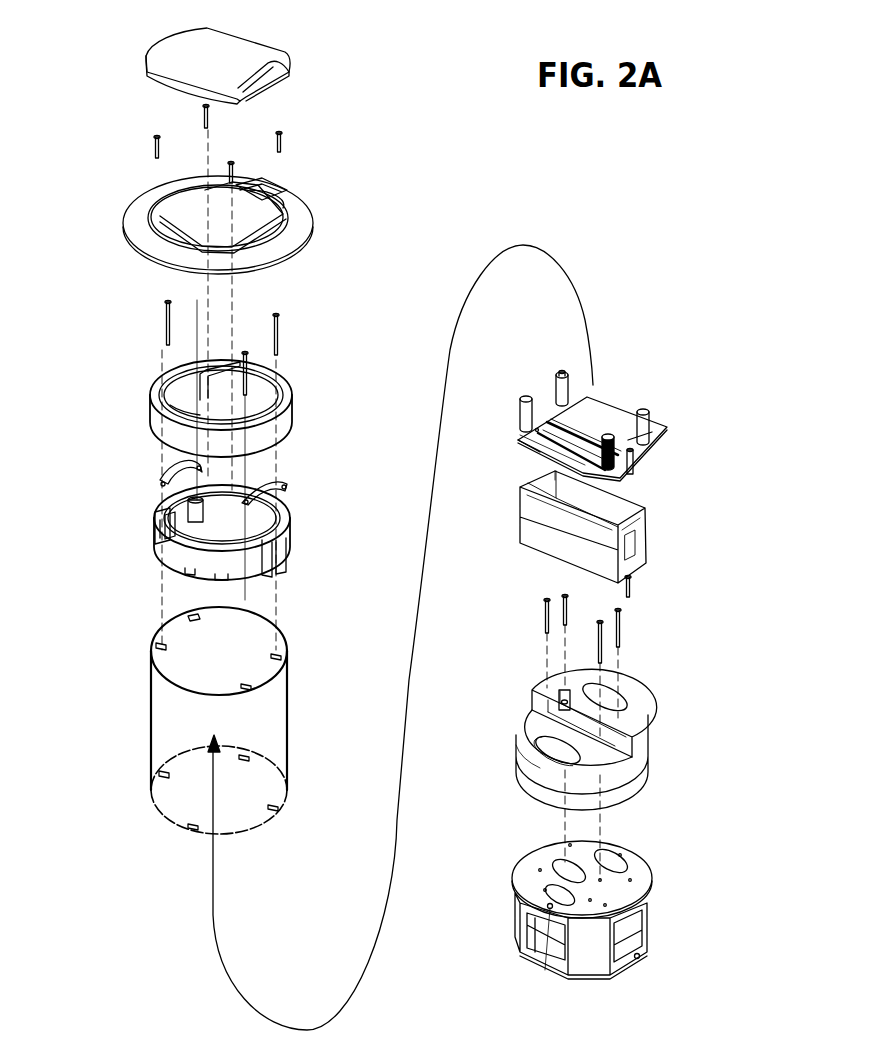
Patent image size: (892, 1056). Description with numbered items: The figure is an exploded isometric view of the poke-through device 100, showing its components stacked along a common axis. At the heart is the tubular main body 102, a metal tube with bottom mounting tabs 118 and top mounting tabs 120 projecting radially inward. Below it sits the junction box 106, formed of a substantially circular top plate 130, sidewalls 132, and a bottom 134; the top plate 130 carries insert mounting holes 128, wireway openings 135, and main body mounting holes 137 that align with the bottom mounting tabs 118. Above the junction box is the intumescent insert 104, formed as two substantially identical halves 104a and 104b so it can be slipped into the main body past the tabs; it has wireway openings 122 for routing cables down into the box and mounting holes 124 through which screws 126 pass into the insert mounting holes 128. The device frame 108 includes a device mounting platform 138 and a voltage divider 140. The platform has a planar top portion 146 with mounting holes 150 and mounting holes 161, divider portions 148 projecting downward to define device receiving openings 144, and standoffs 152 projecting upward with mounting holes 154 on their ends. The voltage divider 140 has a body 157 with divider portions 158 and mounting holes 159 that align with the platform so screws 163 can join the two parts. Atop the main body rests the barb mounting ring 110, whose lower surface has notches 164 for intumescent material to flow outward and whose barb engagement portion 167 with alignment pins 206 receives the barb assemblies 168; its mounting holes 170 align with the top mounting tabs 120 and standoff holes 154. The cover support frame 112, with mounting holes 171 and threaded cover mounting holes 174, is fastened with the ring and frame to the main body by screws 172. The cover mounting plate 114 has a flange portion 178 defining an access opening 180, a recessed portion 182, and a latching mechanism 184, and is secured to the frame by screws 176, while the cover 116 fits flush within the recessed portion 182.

The poke-through device 100 is at (492, 213).
The tubular main body 102 is at (168, 700).
The intumescent insert 104 is at (668, 746).
The half of intumescent insert 104a is at (524, 764).
The half of intumescent insert 104b is at (546, 684).
The junction box 106 is at (655, 906).
The device frame 108 is at (665, 475).
The barb mounting ring 110 is at (165, 548).
The cover support frame 112 is at (283, 425).
The cover mounting plate 114 is at (152, 244).
The cover 116 is at (238, 50).
The bottom mounting tabs 118 is at (273, 808).
The top mounting tabs 120 is at (233, 655).
The wireway openings 122 is at (627, 697).
The mounting holes 124 is at (566, 688).
The screws 126 is at (546, 632).
The insert mounting holes 128 is at (548, 872).
The top plate 130 is at (633, 870).
The sidewalls 132 is at (522, 920).
The bottom 134 is at (628, 957).
The wireway openings 135 is at (620, 862).
The main body mounting holes 137 is at (637, 958).
The device mounting platform 138 is at (510, 405).
The voltage divider 140 is at (660, 536).
The device receiving openings 144 is at (588, 435).
The planar top portion 146 is at (522, 440).
The divider portions 148 is at (605, 432).
The mounting holes 150 is at (584, 397).
The standoffs 152 is at (520, 420).
The mounting holes 154 is at (650, 428).
The body 157 is at (642, 513).
The divider portions 158 is at (535, 537).
The mounting holes 159 is at (550, 488).
The mounting holes 161 is at (634, 474).
The screws 163 is at (633, 592).
The notches 164 is at (280, 556).
The barb engagement portion 167 is at (165, 490).
The barb assemblies 168 is at (163, 467).
The mounting holes 170 is at (158, 497).
The mounting holes 171 is at (193, 393).
The screws 172 is at (163, 313).
The threaded cover mounting holes 174 is at (214, 365).
The screws 176 is at (282, 140).
The flange portion 178 is at (128, 226).
The access opening 180 is at (190, 215).
The recessed portion 182 is at (285, 210).
The latching mechanism 184 is at (250, 172).
The alignment pins 206 is at (273, 529).